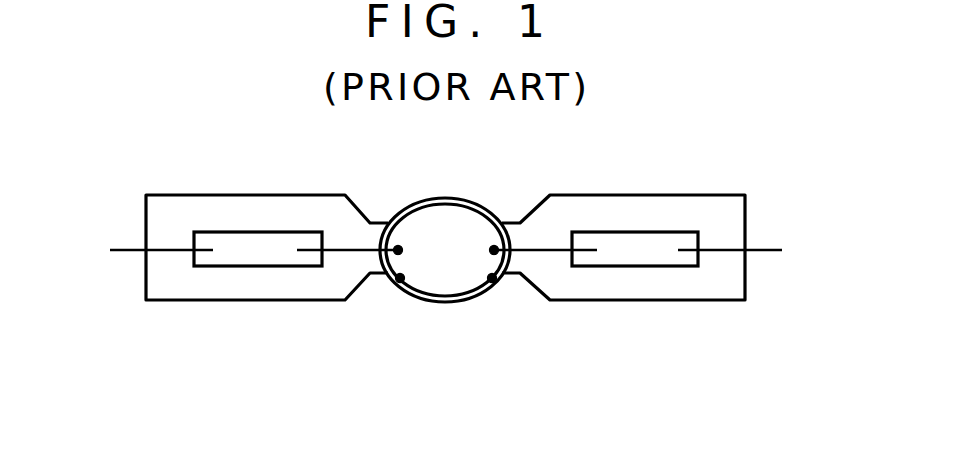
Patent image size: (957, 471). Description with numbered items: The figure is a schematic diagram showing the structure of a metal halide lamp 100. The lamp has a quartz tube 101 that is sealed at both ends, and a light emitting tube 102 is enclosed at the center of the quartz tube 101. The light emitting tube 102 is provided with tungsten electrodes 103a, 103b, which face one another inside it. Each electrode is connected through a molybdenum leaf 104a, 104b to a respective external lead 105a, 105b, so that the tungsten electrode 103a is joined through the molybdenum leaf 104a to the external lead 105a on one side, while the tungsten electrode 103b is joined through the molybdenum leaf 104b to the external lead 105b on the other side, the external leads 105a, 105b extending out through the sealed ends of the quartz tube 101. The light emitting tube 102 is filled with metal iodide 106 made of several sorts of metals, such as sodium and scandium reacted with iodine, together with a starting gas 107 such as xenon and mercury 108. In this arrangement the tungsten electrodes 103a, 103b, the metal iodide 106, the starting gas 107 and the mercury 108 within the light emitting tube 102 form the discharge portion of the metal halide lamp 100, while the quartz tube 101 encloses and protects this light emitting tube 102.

The metal halide lamp 100 is at (322, 165).
The quartz tube 101 is at (198, 205).
The light emitting tube 102 is at (420, 200).
The tungsten electrode 103a is at (398, 250).
The tungsten electrode 103b is at (494, 246).
The molybdenum leaf 104a is at (257, 265).
The molybdenum leaf 104b is at (672, 243).
The external lead 105a is at (125, 247).
The external lead 105b is at (775, 243).
The metal iodide 106 is at (493, 280).
The starting gas 107 is at (453, 268).
The mercury 108 is at (399, 280).